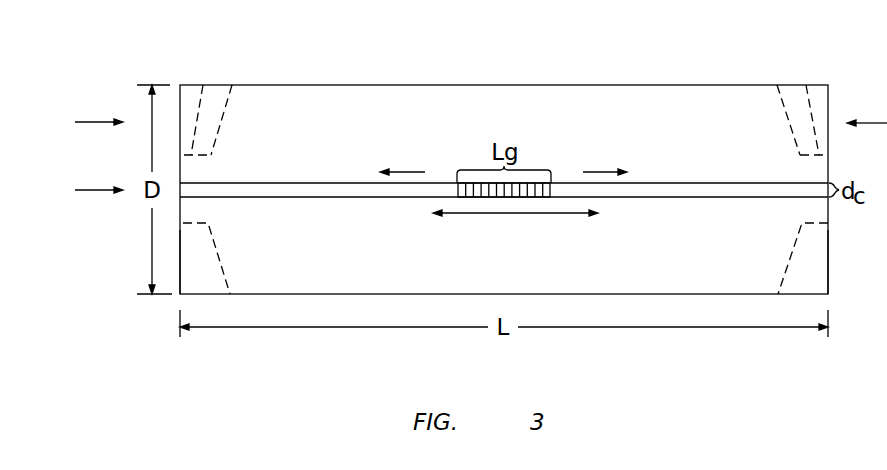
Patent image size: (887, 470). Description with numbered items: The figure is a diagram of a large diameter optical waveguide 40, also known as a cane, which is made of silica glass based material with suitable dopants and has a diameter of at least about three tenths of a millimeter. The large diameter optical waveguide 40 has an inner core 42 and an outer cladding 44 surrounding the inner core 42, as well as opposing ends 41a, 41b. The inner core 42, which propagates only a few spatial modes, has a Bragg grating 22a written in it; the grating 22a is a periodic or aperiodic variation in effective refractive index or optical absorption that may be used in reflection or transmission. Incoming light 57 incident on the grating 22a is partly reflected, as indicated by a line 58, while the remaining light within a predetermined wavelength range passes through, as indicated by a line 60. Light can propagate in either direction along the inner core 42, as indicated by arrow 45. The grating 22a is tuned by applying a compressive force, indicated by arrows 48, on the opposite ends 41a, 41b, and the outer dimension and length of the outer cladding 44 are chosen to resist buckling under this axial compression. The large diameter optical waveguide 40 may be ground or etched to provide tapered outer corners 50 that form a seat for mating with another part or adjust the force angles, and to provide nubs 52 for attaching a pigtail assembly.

The large diameter optical waveguide 40 is at (549, 82).
The outer cladding 44 is at (616, 136).
The Bragg grating 22a is at (466, 197).
The inner core 42 is at (363, 183).
The reflected light line 58 is at (415, 172).
The transmitted light line 60 is at (590, 172).
The light propagation arrow 45 is at (530, 213).
The nubs 52 is at (203, 85).
The tapered outer corners 50 is at (227, 102).
The compressive force arrows 48 is at (95, 122).
The incoming light 57 is at (97, 190).
The first end 41a is at (180, 262).
The second end 41b is at (830, 207).